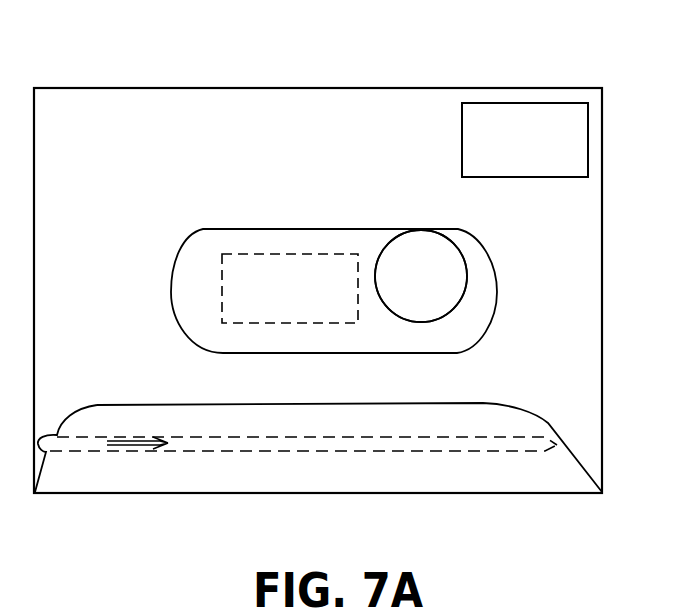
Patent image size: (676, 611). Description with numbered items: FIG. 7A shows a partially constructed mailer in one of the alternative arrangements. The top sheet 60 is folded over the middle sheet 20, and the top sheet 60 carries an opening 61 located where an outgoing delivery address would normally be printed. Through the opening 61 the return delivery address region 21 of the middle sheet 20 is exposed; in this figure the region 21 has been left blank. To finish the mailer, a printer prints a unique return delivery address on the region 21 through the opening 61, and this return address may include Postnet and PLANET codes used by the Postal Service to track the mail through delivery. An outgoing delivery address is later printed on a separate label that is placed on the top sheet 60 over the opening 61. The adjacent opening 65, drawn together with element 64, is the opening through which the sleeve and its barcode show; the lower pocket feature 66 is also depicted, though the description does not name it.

The top sheet 60 is at (342, 103).
The opening 61 is at (338, 230).
The middle sheet 20 is at (373, 345).
The return delivery address region 21 is at (222, 273).
The circular element 64 is at (462, 238).
The opening 65 is at (421, 276).
The bottom flap / pocket 66 is at (210, 472).